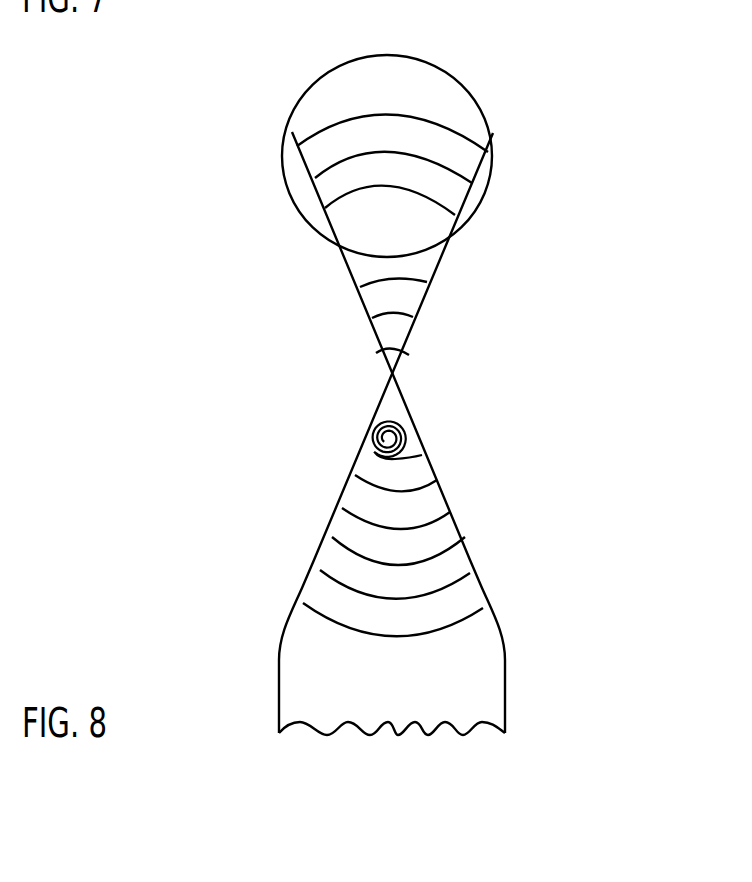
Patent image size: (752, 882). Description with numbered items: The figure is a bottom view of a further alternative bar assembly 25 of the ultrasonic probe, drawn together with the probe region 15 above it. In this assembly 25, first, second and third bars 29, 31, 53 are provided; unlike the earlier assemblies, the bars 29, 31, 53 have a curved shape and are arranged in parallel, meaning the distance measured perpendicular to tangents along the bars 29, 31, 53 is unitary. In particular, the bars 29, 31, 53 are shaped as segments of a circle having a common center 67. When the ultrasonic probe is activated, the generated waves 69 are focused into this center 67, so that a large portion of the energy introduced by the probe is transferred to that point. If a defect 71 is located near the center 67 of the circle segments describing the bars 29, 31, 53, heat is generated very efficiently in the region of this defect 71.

The transducer head 15 is at (418, 102).
The bar assembly 25 is at (240, 168).
The first bar 29 is at (451, 124).
The second bar 31 is at (453, 167).
The third bar 53 is at (450, 203).
The common center 67 is at (396, 373).
The generated waves 69 is at (406, 308).
The defect 71 is at (370, 432).